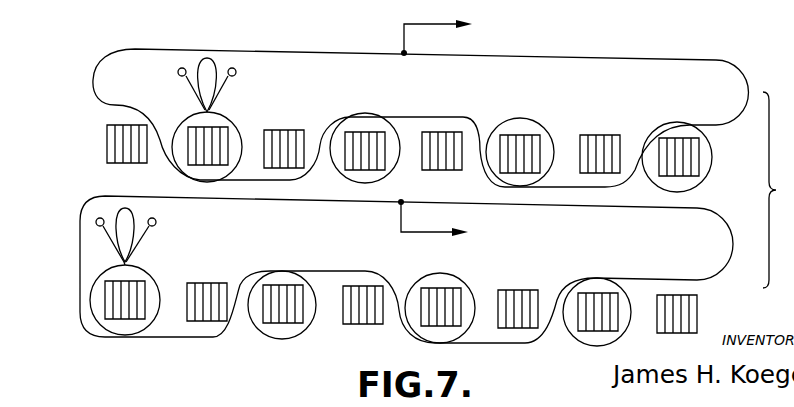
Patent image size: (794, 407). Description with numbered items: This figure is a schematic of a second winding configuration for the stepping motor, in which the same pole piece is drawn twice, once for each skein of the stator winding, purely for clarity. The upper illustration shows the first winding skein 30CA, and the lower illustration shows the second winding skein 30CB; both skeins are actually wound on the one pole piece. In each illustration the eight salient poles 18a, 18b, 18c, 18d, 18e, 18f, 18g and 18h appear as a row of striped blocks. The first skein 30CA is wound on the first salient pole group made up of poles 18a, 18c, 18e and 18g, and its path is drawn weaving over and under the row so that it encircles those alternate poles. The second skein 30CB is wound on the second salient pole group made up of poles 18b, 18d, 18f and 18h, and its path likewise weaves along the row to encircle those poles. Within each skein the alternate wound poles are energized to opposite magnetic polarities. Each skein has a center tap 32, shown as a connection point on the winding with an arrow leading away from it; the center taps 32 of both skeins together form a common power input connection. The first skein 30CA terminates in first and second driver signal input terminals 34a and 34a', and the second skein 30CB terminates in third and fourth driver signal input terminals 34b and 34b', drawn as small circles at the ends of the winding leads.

The first winding skein 30CA is at (256, 44).
The second winding skein 30CB is at (727, 272).
The center tap 32 is at (402, 51).
The first driver signal input terminal 34a is at (168, 85).
The second driver signal input terminal 34a' is at (253, 86).
The third driver signal input terminal 34b is at (87, 234).
The fourth driver signal input terminal 34b' is at (164, 237).
The salient pole 18a is at (192, 135).
The salient pole 18b is at (266, 137).
The salient pole 18c is at (351, 138).
The salient pole 18d is at (448, 140).
The salient pole 18e is at (536, 143).
The salient pole 18f is at (612, 143).
The salient pole 18g is at (697, 153).
The salient pole 18h is at (107, 138).